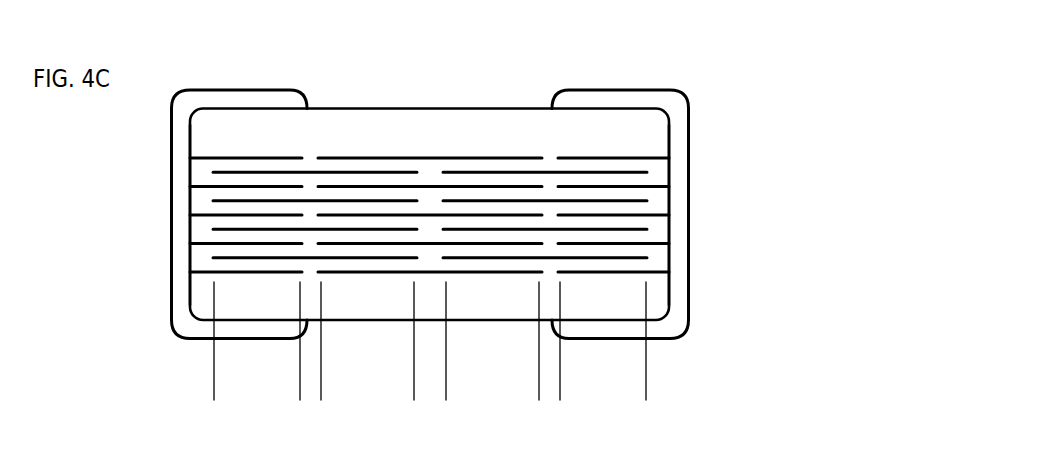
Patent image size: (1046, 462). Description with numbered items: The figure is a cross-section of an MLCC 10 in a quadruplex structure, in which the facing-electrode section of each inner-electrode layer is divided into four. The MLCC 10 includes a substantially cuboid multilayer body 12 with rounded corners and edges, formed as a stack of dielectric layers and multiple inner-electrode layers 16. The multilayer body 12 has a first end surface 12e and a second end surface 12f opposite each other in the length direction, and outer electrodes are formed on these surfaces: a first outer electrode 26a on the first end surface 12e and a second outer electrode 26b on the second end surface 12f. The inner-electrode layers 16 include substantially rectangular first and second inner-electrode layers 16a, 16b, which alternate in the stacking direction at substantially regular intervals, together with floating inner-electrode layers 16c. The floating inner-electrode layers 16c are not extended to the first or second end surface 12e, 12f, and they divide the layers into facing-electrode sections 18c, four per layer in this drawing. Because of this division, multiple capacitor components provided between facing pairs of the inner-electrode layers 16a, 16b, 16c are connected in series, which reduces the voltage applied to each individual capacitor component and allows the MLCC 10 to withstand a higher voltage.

The MLCC 10 is at (183, 72).
The multilayer body 12 is at (393, 106).
The first end surface 12e is at (189, 231).
The second end surface 12f is at (671, 250).
The inner-electrode layers 16 is at (492, 217).
The first inner-electrode layer 16a is at (207, 212).
The second inner-electrode layer 16b is at (655, 213).
The floating inner-electrode layer 16c is at (363, 258).
The facing-electrode section 18c is at (646, 395).
The first outer electrode 26a is at (172, 203).
The second outer electrode 26b is at (687, 205).